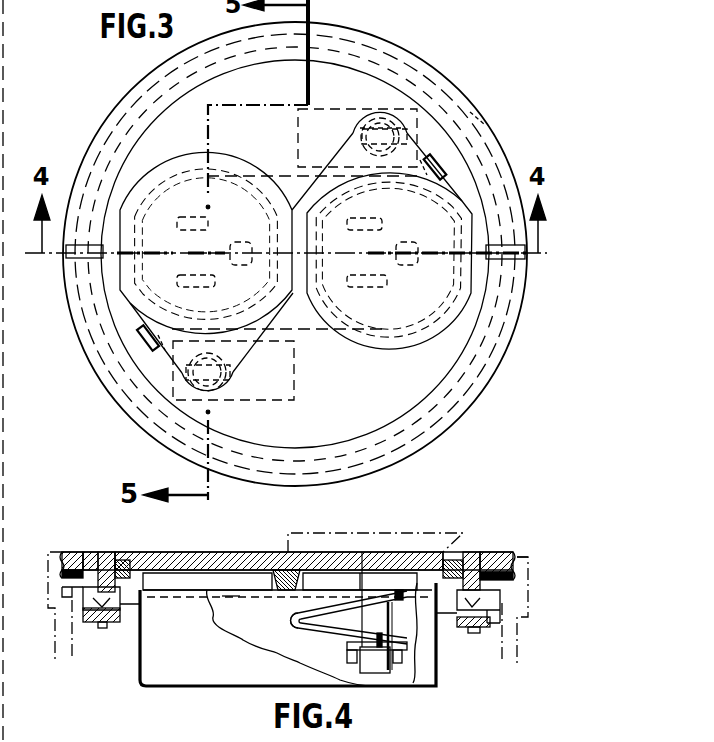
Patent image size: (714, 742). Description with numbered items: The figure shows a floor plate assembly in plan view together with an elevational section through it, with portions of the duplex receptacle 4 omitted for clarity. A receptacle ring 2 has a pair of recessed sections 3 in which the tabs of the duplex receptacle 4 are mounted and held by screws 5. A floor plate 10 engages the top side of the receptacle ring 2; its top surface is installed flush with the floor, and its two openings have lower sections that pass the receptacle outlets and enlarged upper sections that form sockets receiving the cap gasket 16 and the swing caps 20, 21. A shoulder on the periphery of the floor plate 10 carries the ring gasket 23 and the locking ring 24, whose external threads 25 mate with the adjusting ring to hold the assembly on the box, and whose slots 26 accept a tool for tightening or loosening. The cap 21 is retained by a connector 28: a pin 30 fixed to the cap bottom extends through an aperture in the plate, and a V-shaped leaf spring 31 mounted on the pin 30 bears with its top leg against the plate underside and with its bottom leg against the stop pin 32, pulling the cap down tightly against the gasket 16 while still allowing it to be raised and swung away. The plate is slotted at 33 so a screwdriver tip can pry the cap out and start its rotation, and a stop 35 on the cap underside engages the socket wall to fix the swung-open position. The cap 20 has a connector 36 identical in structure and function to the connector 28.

In FIG. 4, the receptacle ring 2 is at (223, 596).
In FIG. 4, the recessed sections 3 is at (88, 624).
In FIG. 3, the duplex receptacle 4 is at (498, 332).
In FIG. 4, the duplex receptacle 4 is at (193, 667).
In FIG. 4, the screws 5 is at (104, 629).
In FIG. 4, the floor plate 10 is at (104, 553).
In FIG. 4, the cap gasket 16 is at (123, 563).
In FIG. 3, the swing cap 20 is at (130, 304).
In FIG. 4, the swing cap 20 is at (200, 552).
In FIG. 3, the swing cap 21 is at (437, 323).
In FIG. 4, the swing cap 21 is at (313, 553).
In FIG. 4, the ring gasket 23 is at (62, 571).
In FIG. 3, the locking ring 24 is at (120, 105).
In FIG. 4, the locking ring 24 is at (73, 552).
In FIG. 4, the external threads 25 is at (515, 556).
In FIG. 4, the slots 26 is at (88, 552).
In FIG. 3, the connector 28 is at (402, 111).
In FIG. 4, the connector 28 is at (387, 668).
In FIG. 4, the pin 30 is at (370, 613).
In FIG. 3, the V-shaped leaf spring 31 is at (393, 108).
In FIG. 4, the V-shaped leaf spring 31 is at (287, 619).
In FIG. 4, the stop pin 32 is at (347, 650).
In FIG. 3, the plate slot 33 is at (446, 165).
In FIG. 3, the stop 35 is at (479, 118).
In FIG. 3, the connector 36 is at (173, 384).